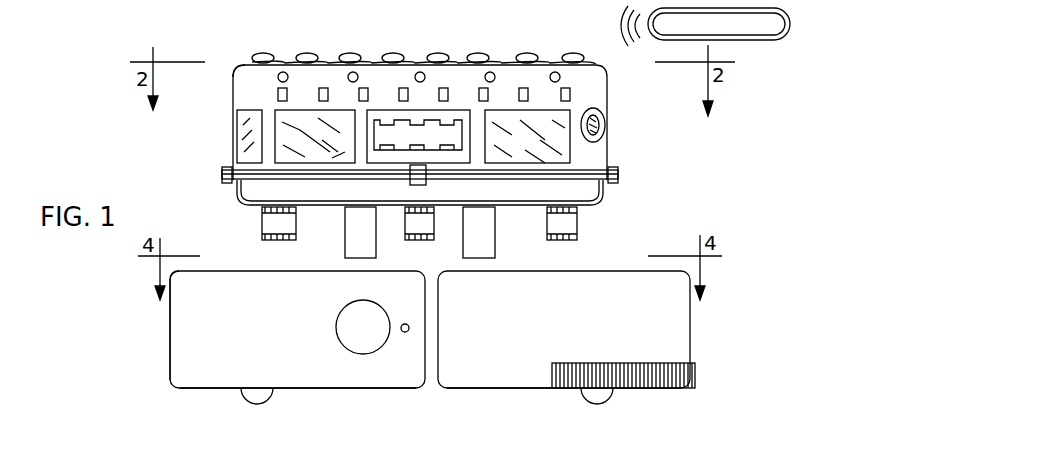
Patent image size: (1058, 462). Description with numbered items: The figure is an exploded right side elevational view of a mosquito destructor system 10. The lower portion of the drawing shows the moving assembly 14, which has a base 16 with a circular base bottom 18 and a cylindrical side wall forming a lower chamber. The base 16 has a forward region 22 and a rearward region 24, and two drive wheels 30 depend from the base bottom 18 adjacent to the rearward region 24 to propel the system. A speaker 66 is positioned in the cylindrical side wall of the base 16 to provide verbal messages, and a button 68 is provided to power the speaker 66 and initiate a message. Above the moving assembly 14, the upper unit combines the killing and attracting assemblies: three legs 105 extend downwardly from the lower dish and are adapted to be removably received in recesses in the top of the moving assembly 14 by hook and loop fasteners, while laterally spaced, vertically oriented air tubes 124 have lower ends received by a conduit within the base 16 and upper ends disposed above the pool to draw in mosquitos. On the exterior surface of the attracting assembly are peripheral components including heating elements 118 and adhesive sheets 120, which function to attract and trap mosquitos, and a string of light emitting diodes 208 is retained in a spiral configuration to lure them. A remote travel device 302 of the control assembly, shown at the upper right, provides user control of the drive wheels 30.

The mosquito destructor system 10 is at (111, 172).
The string of light emitting diodes 208 is at (252, 50).
The heating elements 118 is at (452, 125).
The adhesive sheets 120 is at (590, 110).
The remote travel device 302 is at (737, 36).
The legs 105 is at (262, 230).
The air tubes 124 is at (345, 228).
The moving assembly 14 is at (302, 341).
The rearward region 24 is at (172, 336).
The base 16 is at (340, 390).
The speaker 66 is at (382, 339).
The button 68 is at (403, 334).
The forward region 22 is at (692, 330).
The base bottom 18 is at (506, 390).
The drive wheels 30 is at (242, 398).